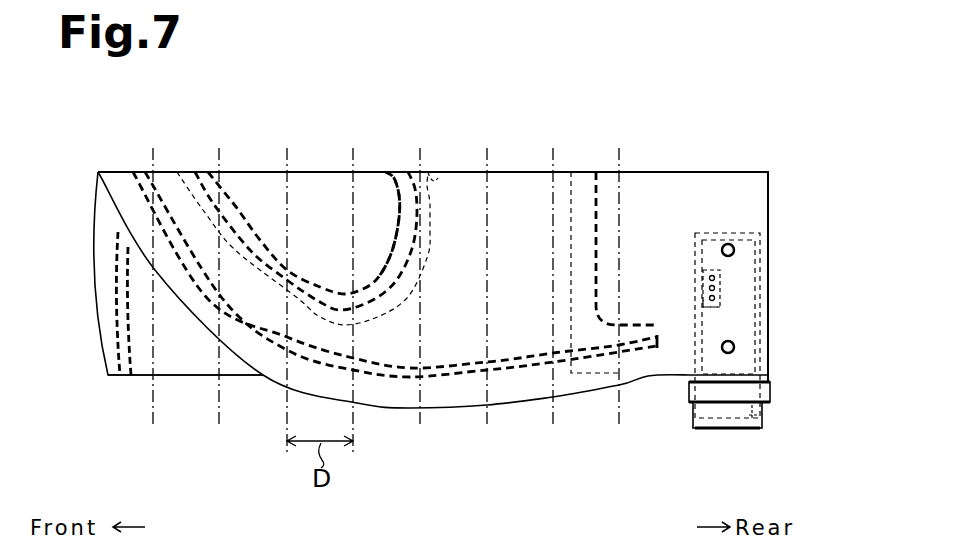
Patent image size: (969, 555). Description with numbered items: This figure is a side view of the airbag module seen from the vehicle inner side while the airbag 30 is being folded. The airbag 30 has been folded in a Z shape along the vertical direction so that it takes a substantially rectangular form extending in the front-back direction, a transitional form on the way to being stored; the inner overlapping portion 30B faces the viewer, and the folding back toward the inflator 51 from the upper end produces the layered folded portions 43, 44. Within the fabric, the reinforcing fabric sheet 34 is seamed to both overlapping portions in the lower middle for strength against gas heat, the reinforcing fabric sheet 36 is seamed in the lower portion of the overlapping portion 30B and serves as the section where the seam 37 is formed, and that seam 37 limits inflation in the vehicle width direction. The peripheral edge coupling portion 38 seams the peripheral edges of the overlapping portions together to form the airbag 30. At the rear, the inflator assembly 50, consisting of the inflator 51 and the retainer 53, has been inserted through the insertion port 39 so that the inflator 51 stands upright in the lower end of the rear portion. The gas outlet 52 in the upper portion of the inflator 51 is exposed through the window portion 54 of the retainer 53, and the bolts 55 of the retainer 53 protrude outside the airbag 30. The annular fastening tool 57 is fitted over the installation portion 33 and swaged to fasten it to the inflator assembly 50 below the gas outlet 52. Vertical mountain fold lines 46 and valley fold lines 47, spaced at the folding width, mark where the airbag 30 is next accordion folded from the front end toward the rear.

The airbag 30 is at (456, 116).
The overlapping portion 30B is at (740, 174).
The installation portion 33 is at (692, 417).
The reinforcing fabric sheet 34 is at (566, 173).
The reinforcing fabric sheet 36 is at (434, 171).
The seam 37 is at (392, 176).
The peripheral edge coupling portion 38 is at (383, 380).
The insertion port 39 is at (755, 428).
The folded portion 43 is at (249, 181).
The folded portion 44 is at (190, 367).
The mountain fold line 46 is at (153, 425).
The valley fold line 47 is at (219, 153).
The inflator assembly 50 is at (708, 447).
The inflator 51 is at (702, 306).
The gas outlet 52 is at (722, 285).
The retainer 53 is at (700, 233).
The window portion 54 is at (703, 277).
The bolt 55 is at (732, 246).
The fastening tool 57 is at (690, 386).